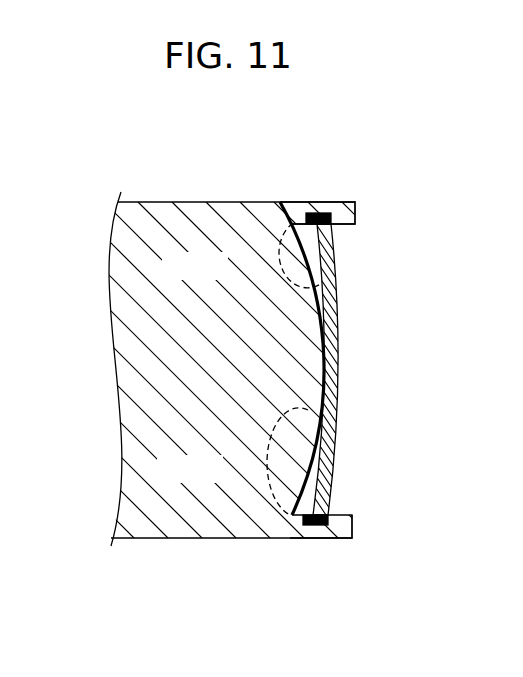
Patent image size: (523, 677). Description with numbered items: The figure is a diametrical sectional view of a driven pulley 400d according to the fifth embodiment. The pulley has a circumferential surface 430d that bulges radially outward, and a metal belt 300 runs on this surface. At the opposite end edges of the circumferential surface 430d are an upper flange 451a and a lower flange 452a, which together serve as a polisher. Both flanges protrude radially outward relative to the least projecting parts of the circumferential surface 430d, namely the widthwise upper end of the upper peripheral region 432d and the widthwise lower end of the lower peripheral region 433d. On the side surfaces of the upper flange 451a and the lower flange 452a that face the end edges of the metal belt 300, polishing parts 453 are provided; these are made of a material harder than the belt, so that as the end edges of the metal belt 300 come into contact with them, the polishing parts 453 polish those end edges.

The driven pulley 400d is at (147, 327).
The metal belt 300 is at (334, 410).
The circumferential surface 430d is at (336, 322).
The upper flange 451a is at (355, 212).
The lower flange 452a is at (352, 522).
The polishing parts 453 is at (317, 213).
The upper peripheral region 432d is at (274, 264).
The lower peripheral region 433d is at (272, 466).